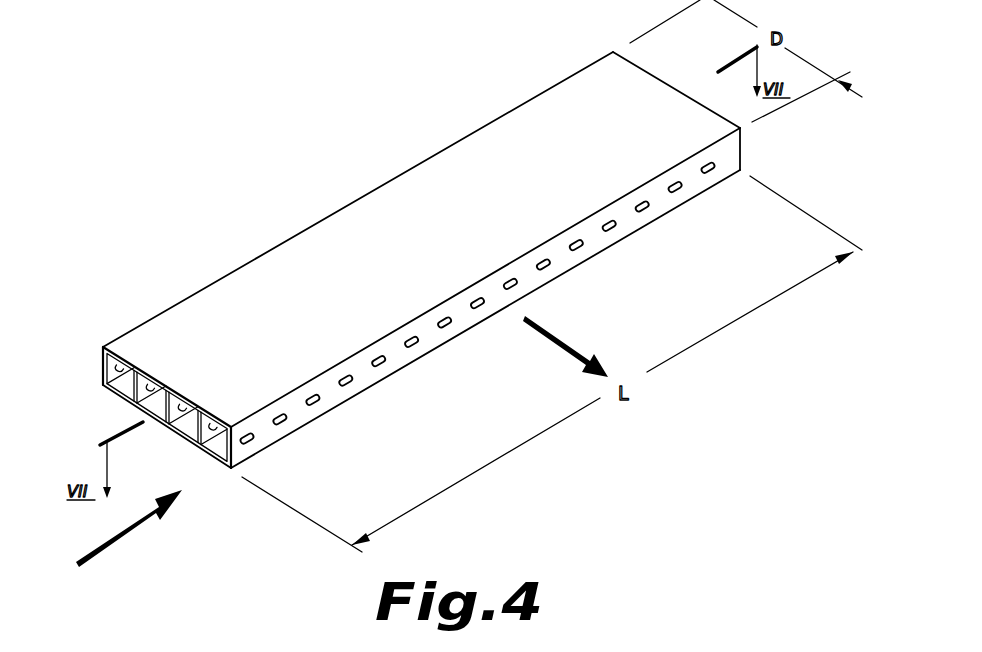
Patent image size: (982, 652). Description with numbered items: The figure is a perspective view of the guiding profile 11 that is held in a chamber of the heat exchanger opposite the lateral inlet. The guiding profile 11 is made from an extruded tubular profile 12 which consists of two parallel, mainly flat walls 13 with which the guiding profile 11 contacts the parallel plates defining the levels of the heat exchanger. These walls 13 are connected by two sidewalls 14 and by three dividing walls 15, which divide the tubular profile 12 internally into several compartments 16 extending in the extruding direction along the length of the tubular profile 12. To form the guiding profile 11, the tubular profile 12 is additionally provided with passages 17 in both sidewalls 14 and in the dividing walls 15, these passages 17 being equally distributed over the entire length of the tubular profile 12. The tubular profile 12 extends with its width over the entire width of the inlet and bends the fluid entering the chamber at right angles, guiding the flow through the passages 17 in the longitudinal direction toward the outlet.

The guiding profile 11 is at (240, 56).
The tubular profile 12 is at (403, 168).
The flat walls 13 is at (200, 330).
The sidewalls 14 is at (242, 464).
The dividing walls 15 is at (133, 386).
The compartments 16 is at (159, 414).
The passages 17 is at (381, 366).